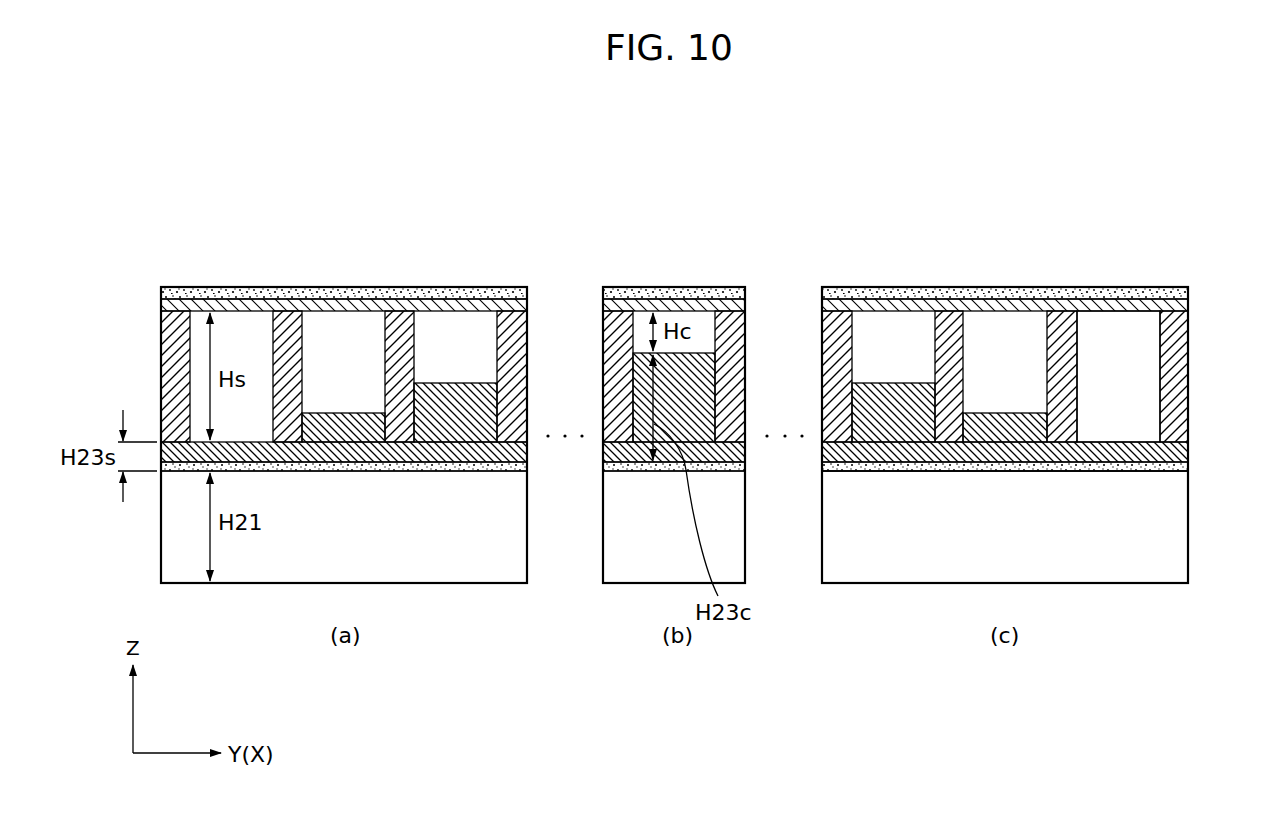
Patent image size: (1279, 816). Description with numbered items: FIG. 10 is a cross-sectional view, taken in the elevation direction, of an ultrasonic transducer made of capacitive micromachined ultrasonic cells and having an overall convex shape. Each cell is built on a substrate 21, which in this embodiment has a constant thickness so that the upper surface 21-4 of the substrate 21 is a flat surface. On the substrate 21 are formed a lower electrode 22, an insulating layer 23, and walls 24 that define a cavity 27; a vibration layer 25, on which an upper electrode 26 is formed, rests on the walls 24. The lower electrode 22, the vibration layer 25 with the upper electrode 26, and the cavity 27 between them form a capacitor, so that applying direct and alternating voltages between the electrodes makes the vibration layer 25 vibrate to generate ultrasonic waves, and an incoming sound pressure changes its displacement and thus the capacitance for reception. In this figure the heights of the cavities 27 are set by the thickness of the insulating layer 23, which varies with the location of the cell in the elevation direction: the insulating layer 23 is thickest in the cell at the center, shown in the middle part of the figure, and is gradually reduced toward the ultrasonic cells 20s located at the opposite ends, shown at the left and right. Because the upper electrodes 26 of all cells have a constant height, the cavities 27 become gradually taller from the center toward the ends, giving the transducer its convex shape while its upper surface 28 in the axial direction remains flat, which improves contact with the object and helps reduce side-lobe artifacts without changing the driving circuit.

The ultrasonic cells located at opposite ends 20s is at (231, 282).
The substrate 21 is at (1176, 531).
The upper surface of the substrate 21-4 is at (1088, 476).
The lower electrode 22 is at (1180, 468).
The insulating layer 23 is at (1180, 456).
The walls 24 is at (1180, 378).
The vibration layer 25 is at (1180, 306).
The upper electrode 26 is at (1188, 293).
The cavity 27 is at (1115, 332).
The upper surface of the ultrasonic transducer 28 is at (1000, 290).